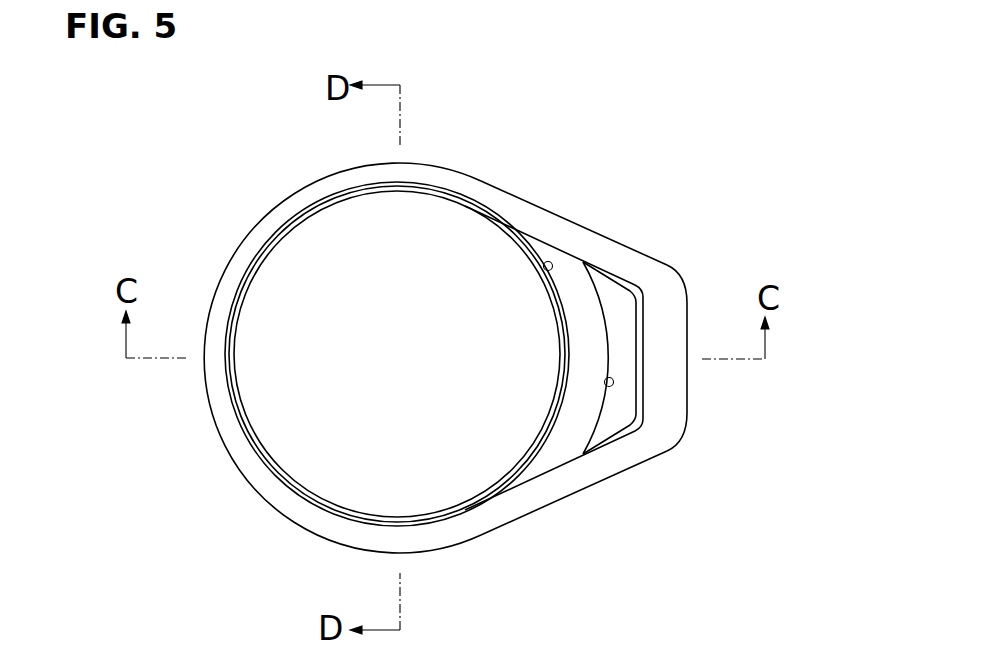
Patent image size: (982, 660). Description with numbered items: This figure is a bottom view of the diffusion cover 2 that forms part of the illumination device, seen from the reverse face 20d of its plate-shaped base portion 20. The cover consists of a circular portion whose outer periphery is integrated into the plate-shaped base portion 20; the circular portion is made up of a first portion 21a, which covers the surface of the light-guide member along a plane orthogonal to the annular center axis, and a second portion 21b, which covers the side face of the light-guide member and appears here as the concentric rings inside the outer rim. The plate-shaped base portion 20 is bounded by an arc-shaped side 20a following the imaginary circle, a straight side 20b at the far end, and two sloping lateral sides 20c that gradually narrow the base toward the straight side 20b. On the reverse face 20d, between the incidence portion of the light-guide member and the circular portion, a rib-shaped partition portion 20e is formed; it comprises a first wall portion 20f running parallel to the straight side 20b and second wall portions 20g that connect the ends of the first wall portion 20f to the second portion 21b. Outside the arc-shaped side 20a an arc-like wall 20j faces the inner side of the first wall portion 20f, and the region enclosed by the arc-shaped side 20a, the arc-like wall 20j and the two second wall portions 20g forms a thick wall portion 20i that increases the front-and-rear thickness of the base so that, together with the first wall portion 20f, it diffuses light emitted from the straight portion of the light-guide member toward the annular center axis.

The diffusion cover 2 is at (485, 166).
The plate-shaped base portion 20 is at (657, 423).
The arc-shaped side 20a is at (545, 268).
The straight side 20b is at (688, 313).
The lateral side 20c is at (557, 217).
The reverse face 20d is at (667, 393).
The partition portion 20e is at (650, 295).
The first wall portion 20f is at (609, 358).
The second wall portion 20g is at (607, 258).
The thick wall portion 20i is at (578, 320).
The arc-like wall 20j is at (605, 385).
The first portion 21a is at (230, 447).
The second portion 21b is at (255, 450).